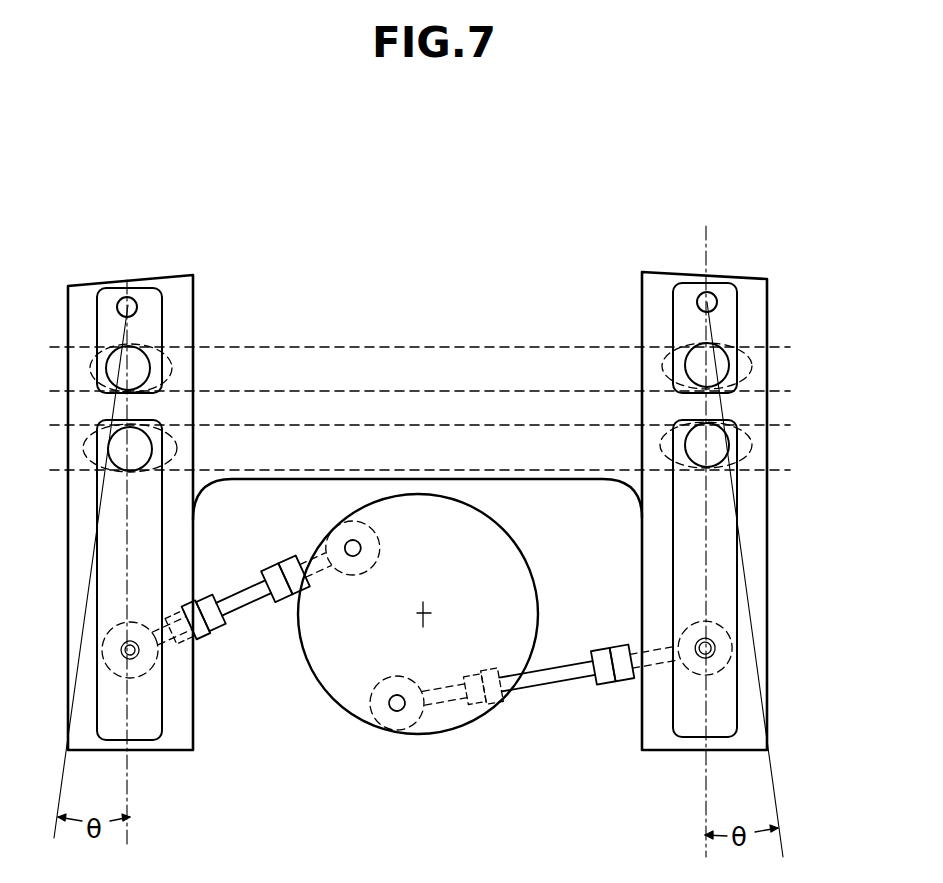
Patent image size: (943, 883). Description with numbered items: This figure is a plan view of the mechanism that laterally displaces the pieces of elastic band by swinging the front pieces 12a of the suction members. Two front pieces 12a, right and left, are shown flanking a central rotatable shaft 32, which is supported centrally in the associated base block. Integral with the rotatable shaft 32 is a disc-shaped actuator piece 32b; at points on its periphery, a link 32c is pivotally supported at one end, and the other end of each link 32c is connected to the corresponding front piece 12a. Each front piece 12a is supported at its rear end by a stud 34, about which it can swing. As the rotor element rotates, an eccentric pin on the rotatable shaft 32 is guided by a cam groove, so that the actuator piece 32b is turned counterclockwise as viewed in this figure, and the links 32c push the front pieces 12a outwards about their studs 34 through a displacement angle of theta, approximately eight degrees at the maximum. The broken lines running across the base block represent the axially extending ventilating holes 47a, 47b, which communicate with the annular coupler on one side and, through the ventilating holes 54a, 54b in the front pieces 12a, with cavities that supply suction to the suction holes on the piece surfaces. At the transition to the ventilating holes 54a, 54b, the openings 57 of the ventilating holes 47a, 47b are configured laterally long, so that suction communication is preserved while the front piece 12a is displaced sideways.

The front piece 12a is at (155, 273).
The stud 34 is at (128, 305).
The ventilating hole 54b is at (132, 368).
The ventilating hole 54a is at (140, 443).
The opening 57 is at (86, 345).
The ventilating hole 47b is at (372, 368).
The ventilating hole 47a is at (433, 443).
The rotatable shaft 32 is at (425, 613).
The actuator piece 32b is at (513, 587).
The link 32c is at (240, 617).